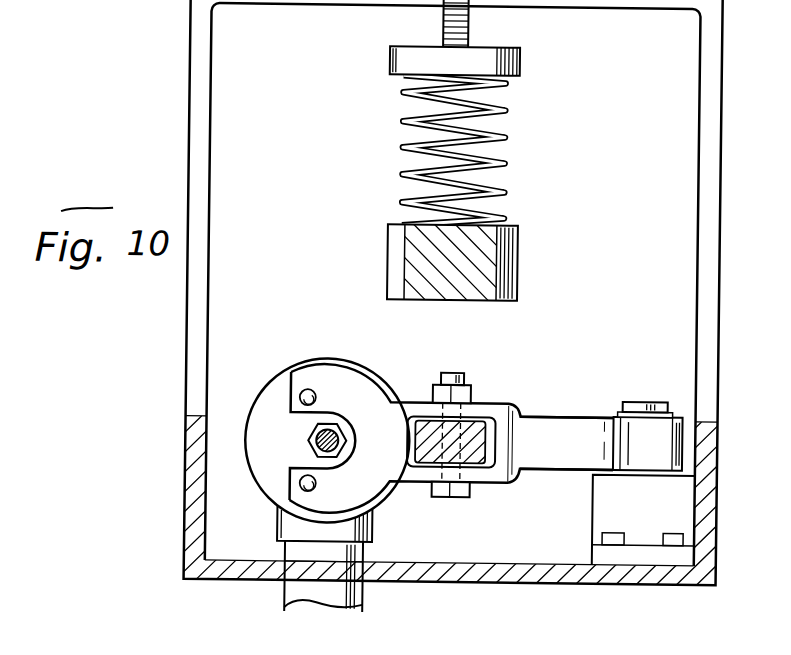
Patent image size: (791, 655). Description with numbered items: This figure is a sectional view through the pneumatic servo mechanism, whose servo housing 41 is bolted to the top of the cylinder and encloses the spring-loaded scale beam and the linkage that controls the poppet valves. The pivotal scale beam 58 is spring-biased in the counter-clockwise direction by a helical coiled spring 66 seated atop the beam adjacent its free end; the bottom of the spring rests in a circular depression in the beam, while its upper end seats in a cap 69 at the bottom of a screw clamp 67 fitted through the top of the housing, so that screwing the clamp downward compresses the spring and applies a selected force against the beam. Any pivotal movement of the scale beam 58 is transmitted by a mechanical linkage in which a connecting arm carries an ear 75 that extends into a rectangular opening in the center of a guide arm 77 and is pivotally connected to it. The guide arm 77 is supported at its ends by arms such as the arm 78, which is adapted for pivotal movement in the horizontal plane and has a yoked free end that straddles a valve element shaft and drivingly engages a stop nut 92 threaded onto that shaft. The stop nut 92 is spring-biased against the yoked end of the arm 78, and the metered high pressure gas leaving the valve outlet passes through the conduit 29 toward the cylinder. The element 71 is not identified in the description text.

The servo housing 41 is at (719, 177).
The screw clamp 67 is at (467, 28).
The cap 69 is at (517, 59).
The helical coiled spring 66 is at (506, 135).
The scale beam 58 is at (480, 270).
The stop nut 92 is at (331, 358).
The ear 75 is at (452, 373).
The arm 78 is at (573, 415).
The guide arm 77 is at (652, 400).
The slide block 71 is at (477, 455).
The conduit 29 is at (369, 608).